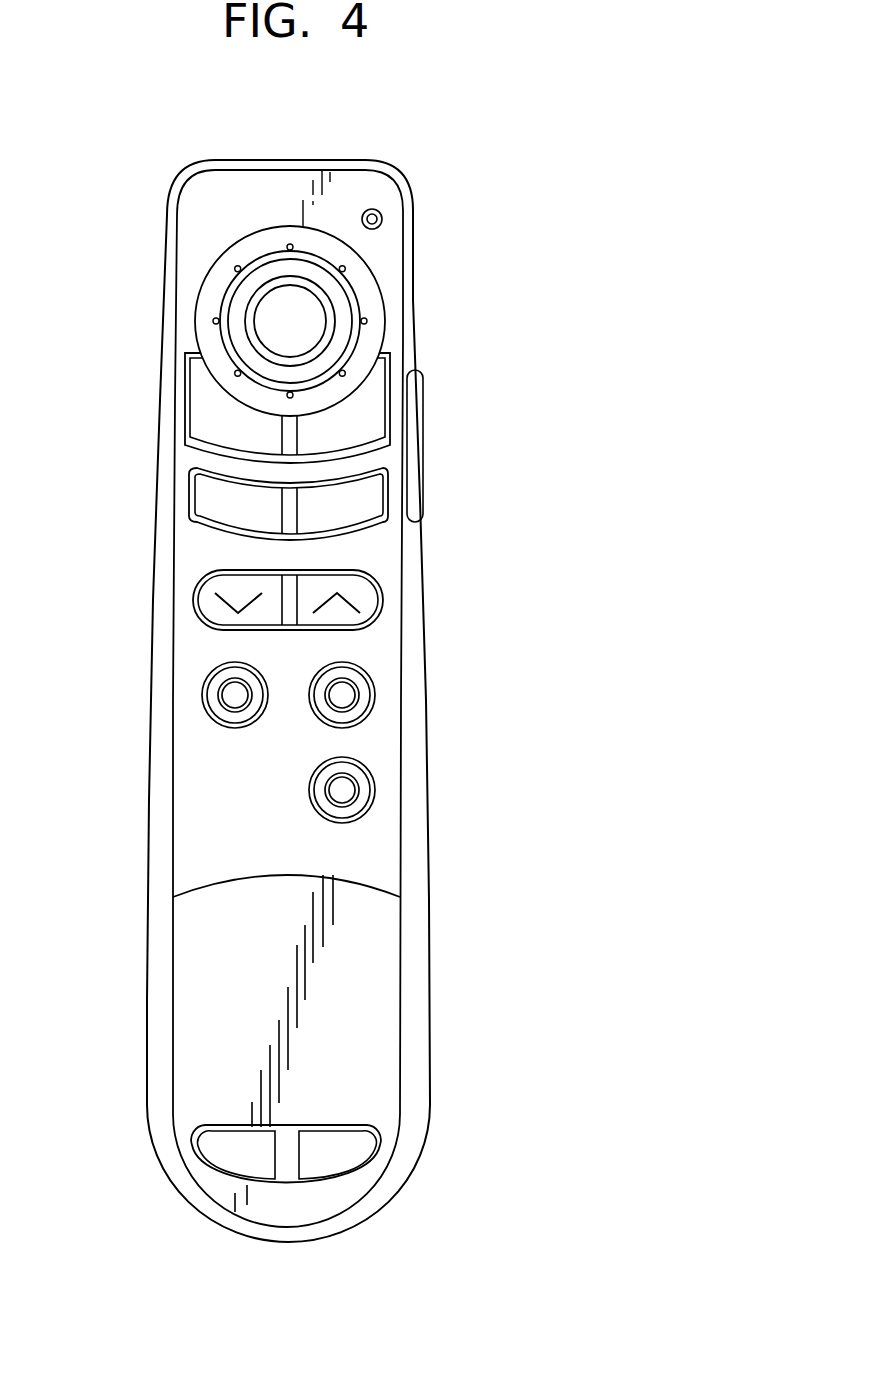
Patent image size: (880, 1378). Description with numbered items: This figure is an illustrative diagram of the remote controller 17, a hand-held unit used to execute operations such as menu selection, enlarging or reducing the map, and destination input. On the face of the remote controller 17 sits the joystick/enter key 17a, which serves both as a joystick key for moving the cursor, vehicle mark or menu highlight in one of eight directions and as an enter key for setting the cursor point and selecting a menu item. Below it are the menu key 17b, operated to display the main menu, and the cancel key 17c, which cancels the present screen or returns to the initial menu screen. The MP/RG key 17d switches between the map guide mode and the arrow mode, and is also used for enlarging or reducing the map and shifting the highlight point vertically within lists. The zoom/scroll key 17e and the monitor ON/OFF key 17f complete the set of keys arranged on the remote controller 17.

The remote controller 17 is at (432, 190).
The joystick/enter key 17a is at (292, 310).
The menu key 17b is at (200, 408).
The cancel key 17c is at (372, 407).
The MP/RG key 17d is at (378, 492).
The zoom/scroll key 17e is at (375, 597).
The monitor ON/OFF key 17f is at (287, 1170).